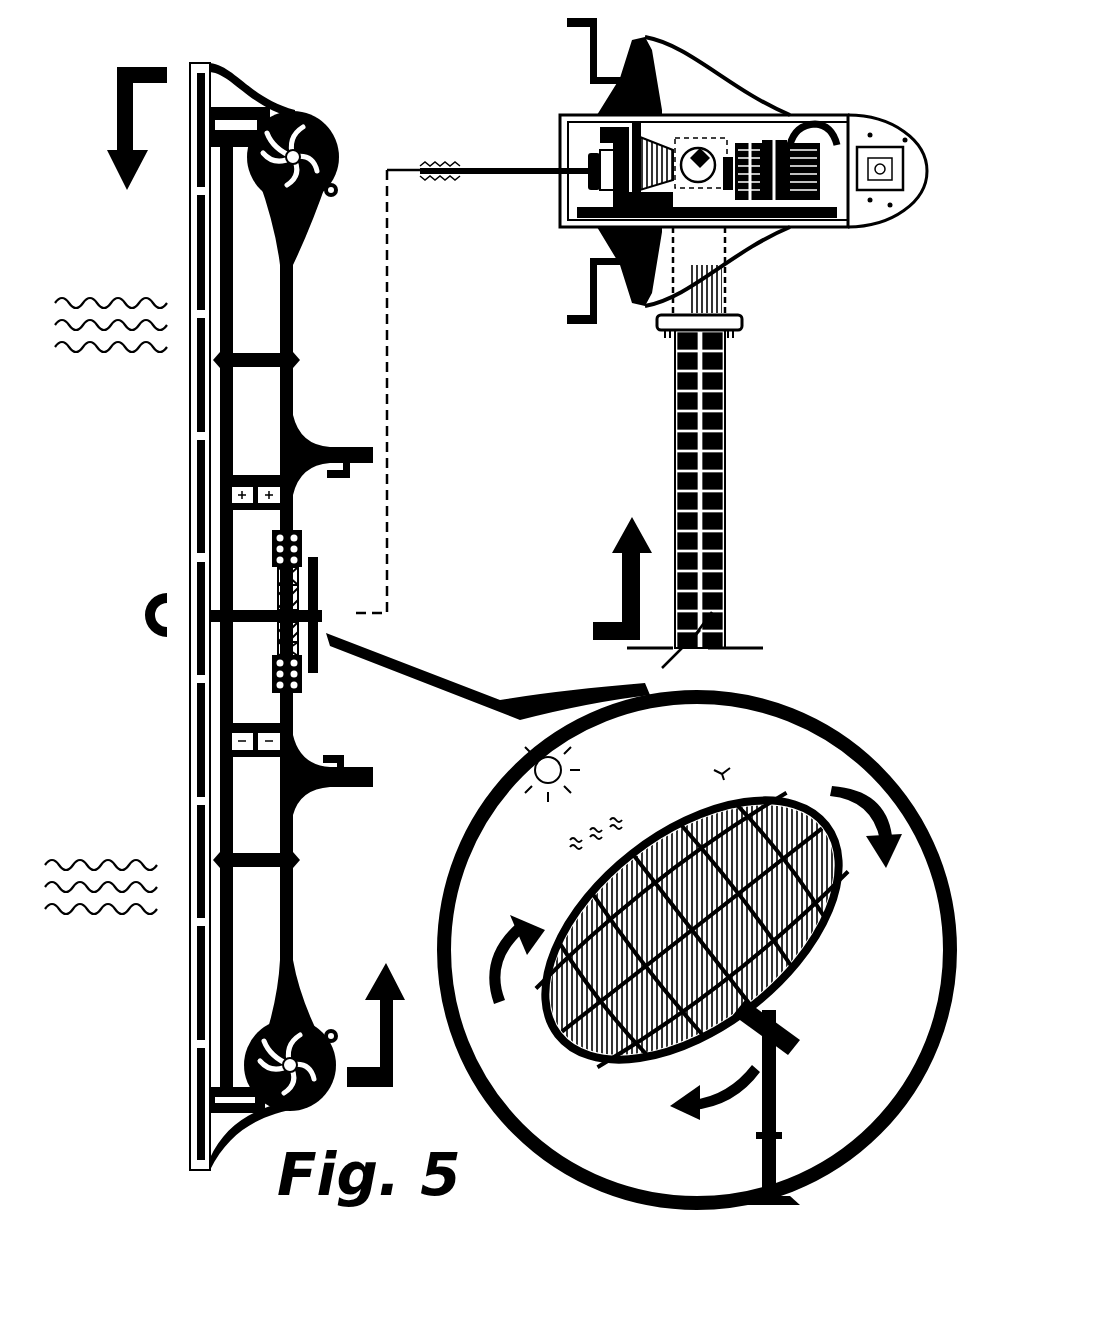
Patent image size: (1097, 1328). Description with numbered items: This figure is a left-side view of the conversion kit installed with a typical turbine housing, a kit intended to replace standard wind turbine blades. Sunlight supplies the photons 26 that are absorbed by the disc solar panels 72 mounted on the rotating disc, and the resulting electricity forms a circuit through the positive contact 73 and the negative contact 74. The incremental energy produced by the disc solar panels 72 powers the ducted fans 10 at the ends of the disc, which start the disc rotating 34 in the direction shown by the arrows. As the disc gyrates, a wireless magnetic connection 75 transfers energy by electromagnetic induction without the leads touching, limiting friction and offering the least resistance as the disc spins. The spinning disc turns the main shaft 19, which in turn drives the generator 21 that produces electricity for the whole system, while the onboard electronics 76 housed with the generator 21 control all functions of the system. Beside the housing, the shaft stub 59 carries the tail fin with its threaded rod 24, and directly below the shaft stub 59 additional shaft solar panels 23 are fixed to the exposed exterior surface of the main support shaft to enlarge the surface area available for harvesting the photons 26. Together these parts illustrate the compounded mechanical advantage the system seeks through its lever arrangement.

The ducted fan 10 is at (288, 118).
The main shaft 19 is at (274, 607).
The generator 21 is at (772, 130).
The shaft solar panel 23 is at (725, 465).
The threaded rod 24 is at (748, 330).
The photons 26 is at (118, 855).
The rotation 34 is at (137, 70).
The shaft stub 59 is at (735, 300).
The disc solar panel 72 is at (196, 528).
The positive contact 73 is at (252, 486).
The negative contact 74 is at (254, 752).
The wireless magnetic connection 75 is at (557, 312).
The onboard electronics 76 is at (920, 170).